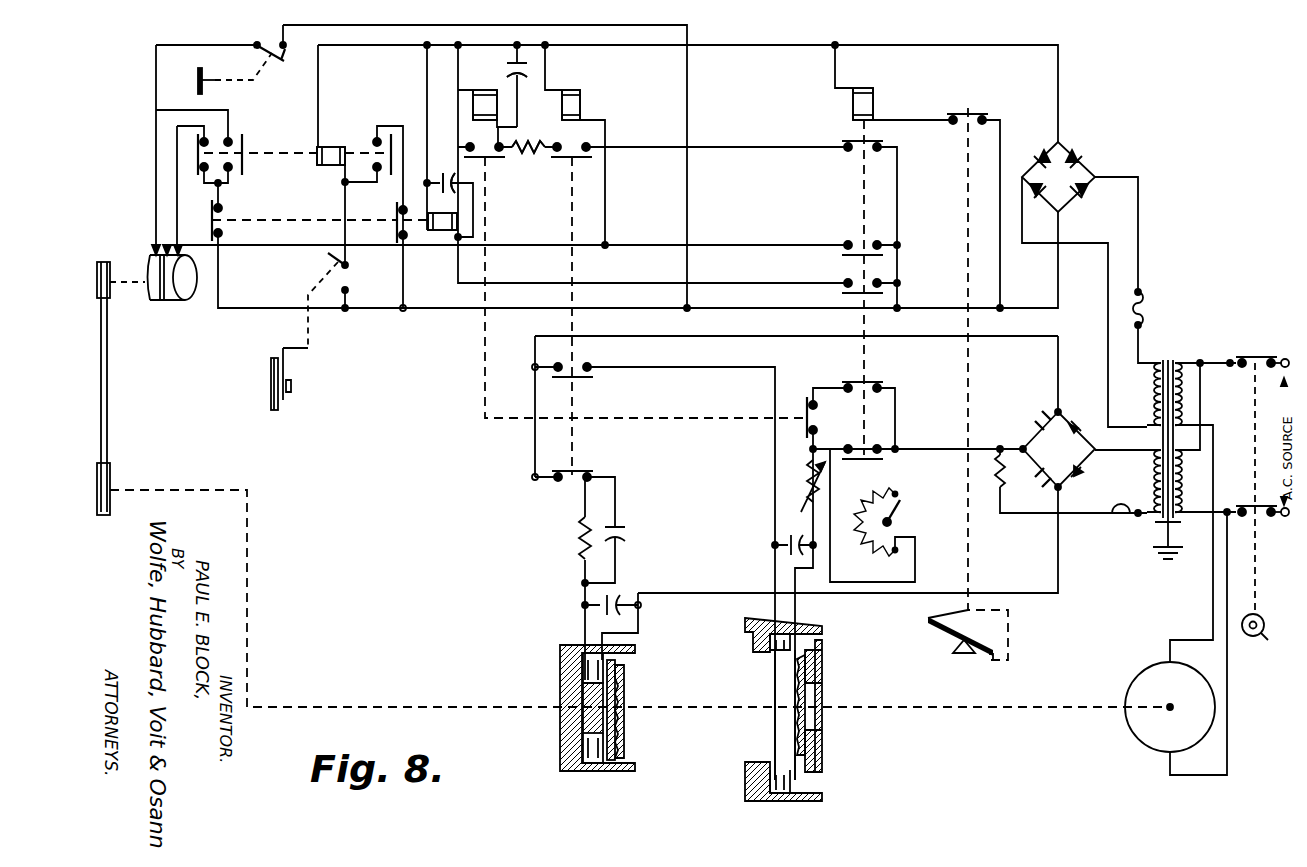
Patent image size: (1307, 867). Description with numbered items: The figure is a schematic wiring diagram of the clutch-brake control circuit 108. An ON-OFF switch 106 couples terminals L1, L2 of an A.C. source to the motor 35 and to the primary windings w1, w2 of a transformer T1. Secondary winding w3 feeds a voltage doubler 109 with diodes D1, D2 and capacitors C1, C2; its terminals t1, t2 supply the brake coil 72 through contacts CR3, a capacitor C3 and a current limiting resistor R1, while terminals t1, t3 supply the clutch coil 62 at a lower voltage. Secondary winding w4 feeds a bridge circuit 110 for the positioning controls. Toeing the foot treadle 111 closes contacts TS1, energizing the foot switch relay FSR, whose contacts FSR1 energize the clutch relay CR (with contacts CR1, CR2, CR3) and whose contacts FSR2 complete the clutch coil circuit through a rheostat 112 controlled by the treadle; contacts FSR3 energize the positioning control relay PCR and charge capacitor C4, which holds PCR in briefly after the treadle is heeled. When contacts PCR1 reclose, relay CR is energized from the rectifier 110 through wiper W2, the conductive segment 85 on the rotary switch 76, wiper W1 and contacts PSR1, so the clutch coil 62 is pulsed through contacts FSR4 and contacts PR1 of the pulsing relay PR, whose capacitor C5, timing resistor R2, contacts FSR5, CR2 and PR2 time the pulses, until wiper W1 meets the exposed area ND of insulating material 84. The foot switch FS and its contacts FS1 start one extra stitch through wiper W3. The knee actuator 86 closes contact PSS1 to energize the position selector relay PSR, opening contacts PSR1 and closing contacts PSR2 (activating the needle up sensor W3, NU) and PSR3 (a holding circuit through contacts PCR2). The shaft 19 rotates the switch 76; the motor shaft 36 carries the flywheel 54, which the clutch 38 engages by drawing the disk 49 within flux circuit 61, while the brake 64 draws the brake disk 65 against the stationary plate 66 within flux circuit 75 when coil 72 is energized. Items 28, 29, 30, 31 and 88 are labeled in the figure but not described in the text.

The shaft 19 is at (120, 285).
The belt 28 is at (107, 414).
The upper pulley 29 is at (102, 262).
The lower pulley 30 is at (110, 490).
The mechanical drive connection 31 is at (216, 490).
The motor 35 is at (1152, 742).
The motor shaft 36 is at (1100, 706).
The electromagnetic friction clutch 38 is at (775, 704).
The clutch disk 49 is at (808, 700).
The flywheel 54 is at (818, 758).
The flux circuit 61 is at (755, 632).
The clutch coil 62 is at (770, 765).
The electromagnetic friction brake 64 is at (578, 710).
The brake disk 65 is at (625, 740).
The stationary plate 66 is at (618, 700).
The brake coil 72 is at (578, 745).
The flux circuit 75 is at (565, 660).
The rotary switch 76 is at (166, 310).
The insulating material 84 is at (198, 280).
The conductive segment 85 is at (172, 300).
The knee actuator 86 is at (285, 364).
The plate 88 is at (270, 403).
The ON-OFF switch 106 is at (1255, 357).
The clutch-brake control circuit 108 is at (1122, 136).
The voltage doubler 109 is at (1048, 482).
The bridge circuit 110 is at (1062, 140).
The foot treadle 111 is at (930, 622).
The rheostat 112 is at (903, 518).
The foot controlled switch FS is at (198, 78).
The foot switch contacts FS1 is at (280, 63).
The position selector relay PSR is at (330, 166).
The position selector relay contacts PSR1 is at (200, 143).
The position selector relay contacts PSR2 is at (243, 142).
The position selector relay contacts PSR3 is at (378, 130).
The positioning control relay PCR is at (438, 233).
The positioning control relay contacts PCR1 is at (214, 218).
The positioning control relay contacts PCR2 is at (398, 230).
The position selector switch contact PSS1 is at (332, 262).
The pulsing relay PR is at (472, 100).
The pulsing relay contacts PR1 is at (804, 428).
The pulsing relay contacts PR2 is at (492, 160).
The clutch relay CR is at (580, 102).
The clutch relay contacts CR1 is at (580, 376).
The clutch relay contacts CR2 is at (590, 156).
The clutch relay contacts CR3 is at (580, 472).
The foot switch relay FSR is at (863, 96).
The foot switch relay contacts FSR1 is at (842, 257).
The foot switch relay contacts FSR2 is at (880, 462).
The foot switch relay contacts FSR3 is at (885, 293).
The foot switch relay contacts FSR4 is at (874, 380).
The foot switch relay contacts FSR5 is at (843, 140).
The treadle switch contacts TS1 is at (972, 106).
The capacitor C1 is at (1037, 478).
The capacitor C2 is at (1035, 424).
The capacitor C3 is at (626, 542).
The capacitor C4 is at (452, 175).
The capacitor C5 is at (521, 72).
The current limiting resistor R1 is at (577, 533).
The timing resistor R2 is at (527, 150).
The diode D1 is at (1082, 474).
The diode D2 is at (1077, 423).
The voltage doubler terminal t1 is at (1055, 410).
The voltage doubler terminal t2 is at (1062, 488).
The voltage doubler terminal t3 is at (1021, 448).
The transformer T1 is at (1152, 535).
The primary winding w1 is at (1188, 512).
The primary winding w2 is at (1185, 365).
The secondary winding w3 is at (1150, 468).
The secondary winding w4 is at (1150, 394).
The A.C. source terminal L1 is at (1285, 517).
The A.C. source terminal L2 is at (1285, 358).
The needle down exposed area ND is at (190, 258).
The needle up exposed area NU is at (165, 303).
The wiper W1 is at (180, 252).
The wiper W2 is at (166, 247).
The wiper W3 is at (154, 250).